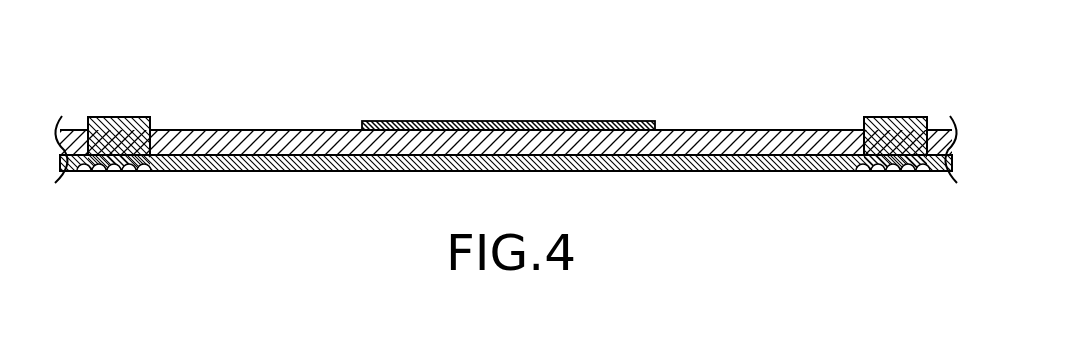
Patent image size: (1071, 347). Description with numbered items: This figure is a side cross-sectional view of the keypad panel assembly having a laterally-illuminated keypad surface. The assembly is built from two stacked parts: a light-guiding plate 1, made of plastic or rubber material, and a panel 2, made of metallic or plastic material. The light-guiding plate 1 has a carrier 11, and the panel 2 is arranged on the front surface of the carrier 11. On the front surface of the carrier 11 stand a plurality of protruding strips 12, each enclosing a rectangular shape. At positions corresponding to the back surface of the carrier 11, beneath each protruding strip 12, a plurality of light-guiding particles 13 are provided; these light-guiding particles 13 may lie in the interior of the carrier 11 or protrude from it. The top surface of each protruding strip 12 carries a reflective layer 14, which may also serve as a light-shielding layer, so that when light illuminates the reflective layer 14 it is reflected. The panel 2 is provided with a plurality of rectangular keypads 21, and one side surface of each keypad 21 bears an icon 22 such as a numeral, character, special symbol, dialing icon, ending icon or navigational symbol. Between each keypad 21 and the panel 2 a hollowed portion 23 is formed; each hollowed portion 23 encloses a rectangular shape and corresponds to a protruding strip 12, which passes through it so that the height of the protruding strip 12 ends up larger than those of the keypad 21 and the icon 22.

The light-guiding plate 1 is at (506, 146).
The panel 2 is at (506, 91).
The carrier 11 is at (690, 165).
The protruding strip 12 is at (877, 146).
The light-guiding particles 13 is at (895, 171).
The reflective layer 14 is at (897, 118).
The keypad 21 is at (731, 142).
The icon 22 is at (497, 121).
The hollowed portion 23 is at (872, 125).